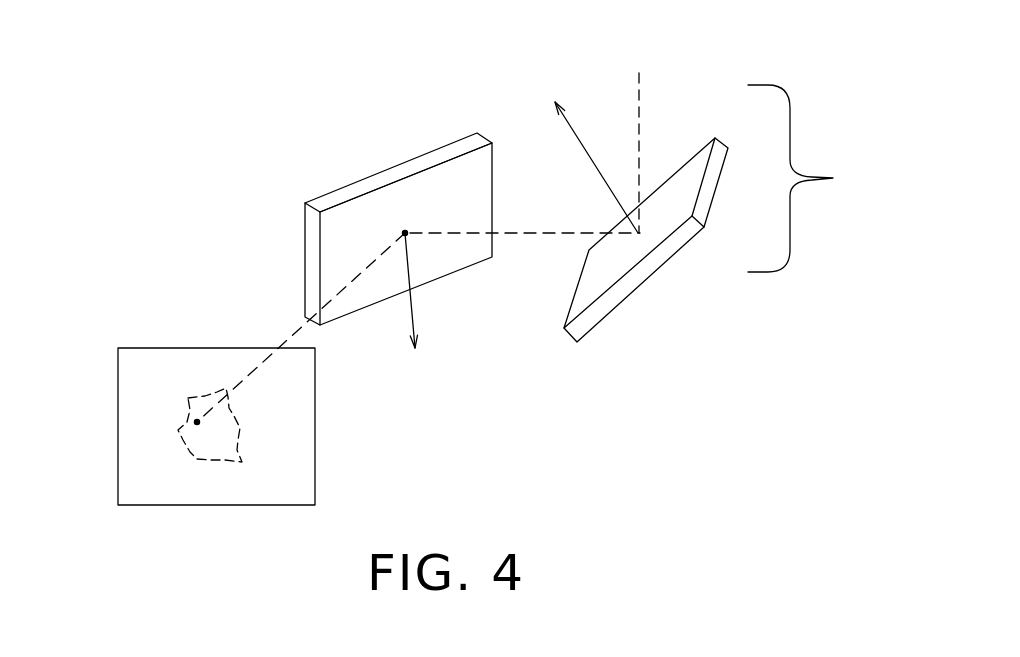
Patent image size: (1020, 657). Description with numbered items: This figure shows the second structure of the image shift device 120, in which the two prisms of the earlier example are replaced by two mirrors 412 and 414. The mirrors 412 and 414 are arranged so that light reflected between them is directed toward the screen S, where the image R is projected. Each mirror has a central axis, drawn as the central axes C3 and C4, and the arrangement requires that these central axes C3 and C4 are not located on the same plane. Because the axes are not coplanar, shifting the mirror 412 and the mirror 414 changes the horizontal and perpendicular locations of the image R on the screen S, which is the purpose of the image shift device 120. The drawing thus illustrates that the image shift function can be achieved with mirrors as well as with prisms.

The image shift device 120 is at (820, 178).
The mirror 412 is at (693, 148).
The mirror 414 is at (302, 260).
The screen S is at (169, 347).
The image R is at (232, 416).
The central axis C3 is at (588, 147).
The central axis C4 is at (414, 313).